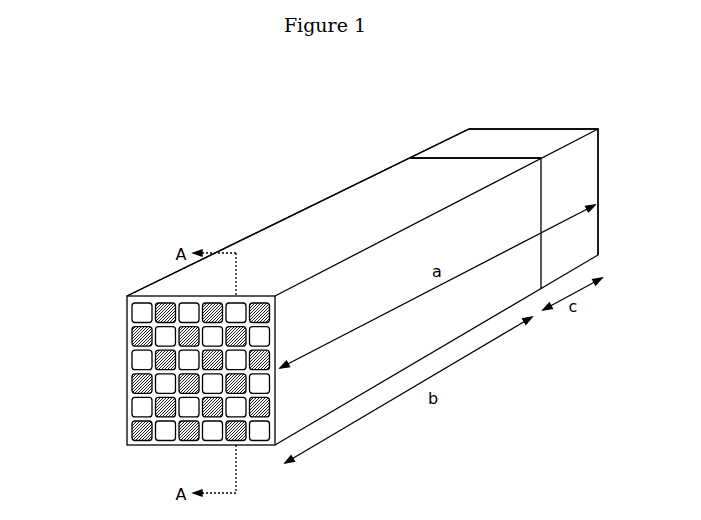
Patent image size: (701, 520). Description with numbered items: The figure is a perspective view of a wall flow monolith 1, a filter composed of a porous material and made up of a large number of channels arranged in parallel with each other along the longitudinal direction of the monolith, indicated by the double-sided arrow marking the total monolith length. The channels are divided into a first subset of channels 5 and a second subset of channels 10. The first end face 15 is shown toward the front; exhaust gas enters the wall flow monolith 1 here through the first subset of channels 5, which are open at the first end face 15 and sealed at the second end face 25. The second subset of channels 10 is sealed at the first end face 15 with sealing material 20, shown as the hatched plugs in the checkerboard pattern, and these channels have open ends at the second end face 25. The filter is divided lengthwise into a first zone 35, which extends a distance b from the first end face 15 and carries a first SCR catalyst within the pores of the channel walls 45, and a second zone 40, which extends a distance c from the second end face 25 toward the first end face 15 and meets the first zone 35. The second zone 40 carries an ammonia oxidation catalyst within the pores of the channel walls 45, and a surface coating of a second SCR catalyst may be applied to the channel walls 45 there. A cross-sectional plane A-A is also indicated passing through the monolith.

The wall flow monolith 1 is at (320, 273).
The first subset of channels 5 is at (168, 437).
The second subset of channels 10 is at (136, 385).
The first end face 15 is at (132, 325).
The sealing material 20 is at (136, 430).
The second end face 25 is at (533, 128).
The first zone 35 is at (360, 205).
The second zone 40 is at (460, 150).
The channel wall 45 is at (256, 428).